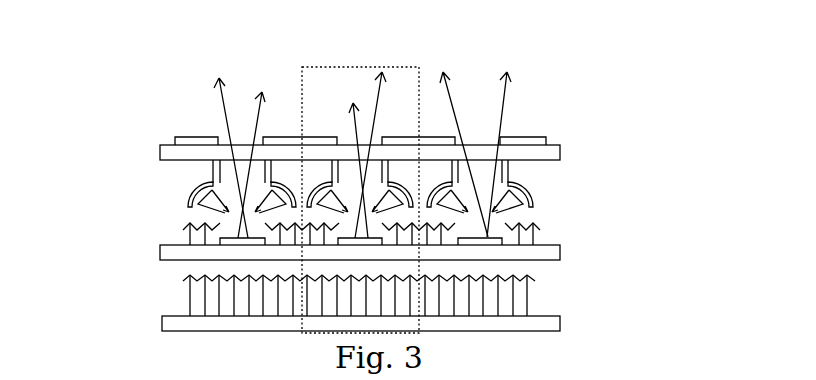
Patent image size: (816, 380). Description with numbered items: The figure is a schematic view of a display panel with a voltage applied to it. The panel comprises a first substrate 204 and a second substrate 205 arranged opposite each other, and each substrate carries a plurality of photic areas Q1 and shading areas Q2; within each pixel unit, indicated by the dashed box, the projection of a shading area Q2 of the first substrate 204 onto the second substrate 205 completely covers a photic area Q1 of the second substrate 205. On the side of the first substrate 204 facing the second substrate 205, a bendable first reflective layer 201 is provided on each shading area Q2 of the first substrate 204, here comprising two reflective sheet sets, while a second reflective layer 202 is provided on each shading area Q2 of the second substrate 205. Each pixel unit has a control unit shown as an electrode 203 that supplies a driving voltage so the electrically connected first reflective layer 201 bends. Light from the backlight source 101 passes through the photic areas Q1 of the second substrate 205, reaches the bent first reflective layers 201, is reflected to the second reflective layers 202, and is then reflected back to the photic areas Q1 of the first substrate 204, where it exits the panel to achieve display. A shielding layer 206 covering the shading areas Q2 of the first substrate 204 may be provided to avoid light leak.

The backlight source 101 is at (545, 300).
The first reflective layer 201 is at (531, 198).
The second reflective layer 202 is at (520, 230).
The electrode 203 is at (508, 170).
The first substrate 204 is at (540, 152).
The second substrate 205 is at (545, 250).
The shielding layer 206 is at (311, 138).
The photic area Q1 is at (315, 232).
The shading area Q2 is at (232, 230).